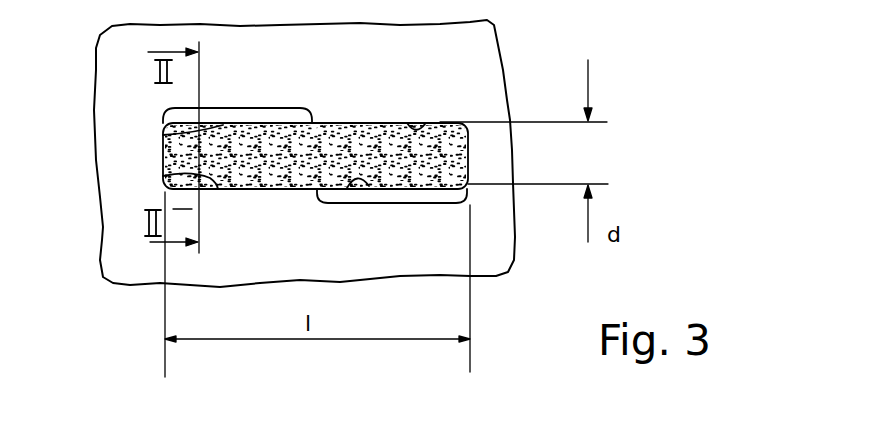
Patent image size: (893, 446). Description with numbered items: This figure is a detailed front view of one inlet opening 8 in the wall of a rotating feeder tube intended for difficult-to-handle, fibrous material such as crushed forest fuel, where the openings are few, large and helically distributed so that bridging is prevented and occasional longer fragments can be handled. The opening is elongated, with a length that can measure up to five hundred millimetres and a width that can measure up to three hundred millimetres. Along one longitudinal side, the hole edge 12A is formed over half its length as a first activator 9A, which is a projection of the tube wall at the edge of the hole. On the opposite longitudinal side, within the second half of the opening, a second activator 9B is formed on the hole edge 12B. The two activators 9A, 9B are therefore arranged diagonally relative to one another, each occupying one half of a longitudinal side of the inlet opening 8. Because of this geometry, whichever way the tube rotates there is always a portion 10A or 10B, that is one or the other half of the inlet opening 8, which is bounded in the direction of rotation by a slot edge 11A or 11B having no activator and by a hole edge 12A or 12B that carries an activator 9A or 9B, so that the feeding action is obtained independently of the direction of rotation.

The inlet opening 8 is at (468, 169).
The first activator 9A is at (243, 120).
The second activator 9B is at (410, 195).
The portion 10A is at (266, 156).
The portion 10B is at (382, 140).
The slot edge 11A is at (163, 176).
The slot edge 11B is at (425, 125).
The hole edge 12A is at (163, 134).
The hole edge 12B is at (365, 176).